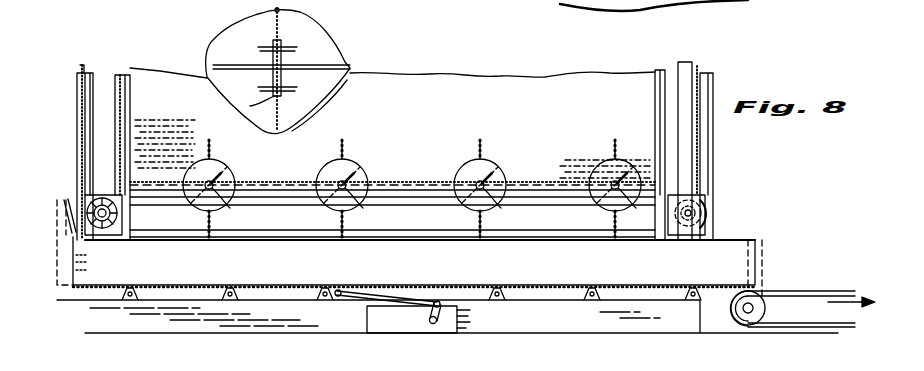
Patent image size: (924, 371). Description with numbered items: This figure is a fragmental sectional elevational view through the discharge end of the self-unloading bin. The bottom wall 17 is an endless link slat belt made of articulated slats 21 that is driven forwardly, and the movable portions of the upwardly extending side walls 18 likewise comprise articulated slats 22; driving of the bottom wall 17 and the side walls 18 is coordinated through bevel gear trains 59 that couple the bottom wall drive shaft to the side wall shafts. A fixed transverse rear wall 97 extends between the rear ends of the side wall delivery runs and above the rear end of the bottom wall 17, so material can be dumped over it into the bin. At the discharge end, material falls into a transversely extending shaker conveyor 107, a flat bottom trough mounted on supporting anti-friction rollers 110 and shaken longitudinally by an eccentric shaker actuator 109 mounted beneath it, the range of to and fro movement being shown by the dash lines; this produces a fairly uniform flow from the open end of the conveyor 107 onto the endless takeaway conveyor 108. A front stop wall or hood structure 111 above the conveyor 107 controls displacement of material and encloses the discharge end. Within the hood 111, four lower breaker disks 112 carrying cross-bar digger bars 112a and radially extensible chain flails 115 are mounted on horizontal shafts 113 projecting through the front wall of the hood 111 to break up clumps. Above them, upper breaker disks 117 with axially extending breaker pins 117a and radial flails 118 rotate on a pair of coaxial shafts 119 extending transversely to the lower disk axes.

The bottom wall 17 is at (148, 203).
The side walls 18 is at (131, 103).
The articulated slats 21 is at (280, 250).
The articulated slats 22 is at (409, 14).
The bevel gear trains 59 is at (84, 222).
The fixed transverse rear wall 97 is at (503, 82).
The shaker conveyor 107 is at (271, 290).
The takeaway conveyor 108 is at (815, 291).
The shaker actuator 109 is at (398, 325).
The anti-friction rollers 110 is at (590, 296).
The hood structure 111 is at (82, 161).
The breaker disks 112 is at (226, 166).
The digger bars 112a is at (392, 179).
The horizontal shafts 113 is at (364, 201).
The chain flails 115 is at (343, 141).
The upper breaker disks 117 is at (266, 48).
The breaker pins 117a is at (250, 106).
The flails 118 is at (292, 13).
The coaxial shafts 119 is at (296, 63).